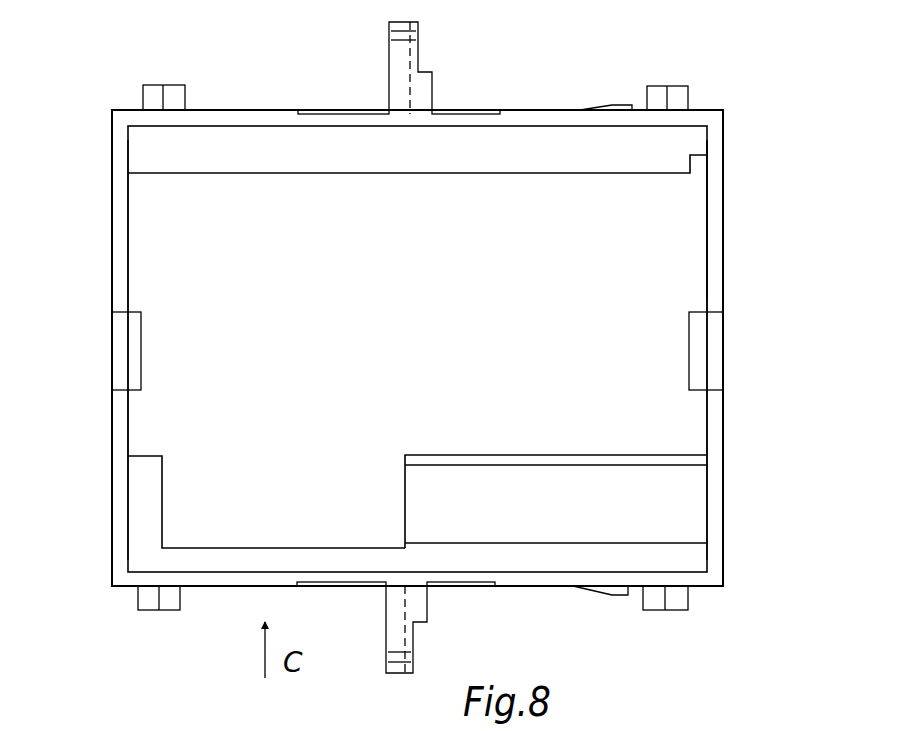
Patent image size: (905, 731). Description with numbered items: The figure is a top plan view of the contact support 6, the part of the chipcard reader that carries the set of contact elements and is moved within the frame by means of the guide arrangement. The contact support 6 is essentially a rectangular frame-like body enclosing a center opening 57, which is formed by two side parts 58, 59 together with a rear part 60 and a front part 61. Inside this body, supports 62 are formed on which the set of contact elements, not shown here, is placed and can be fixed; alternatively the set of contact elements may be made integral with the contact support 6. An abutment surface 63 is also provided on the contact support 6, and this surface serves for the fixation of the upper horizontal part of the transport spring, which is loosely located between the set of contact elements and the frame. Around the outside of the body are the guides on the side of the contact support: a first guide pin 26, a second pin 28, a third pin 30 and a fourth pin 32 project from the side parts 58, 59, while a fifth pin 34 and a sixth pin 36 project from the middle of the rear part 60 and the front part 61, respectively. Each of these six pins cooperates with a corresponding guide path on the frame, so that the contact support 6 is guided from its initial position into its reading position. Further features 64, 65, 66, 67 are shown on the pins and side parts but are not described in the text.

The contact support 6 is at (551, 108).
The first guide pin 26 is at (157, 82).
The second pin 28 is at (677, 85).
The third pin 30 is at (152, 612).
The fourth pin 32 is at (672, 612).
The fifth pin 34 is at (434, 88).
The sixth pin 36 is at (428, 607).
The center opening 57 is at (700, 208).
The side part 58 is at (220, 118).
The side part 59 is at (227, 582).
The rear part 60 is at (118, 248).
The front part 61 is at (712, 275).
The supports 62 is at (398, 152).
The abutment surface 63 is at (570, 480).
The upper guide plate 64 is at (612, 105).
The lower guide plate 65 is at (612, 593).
The upper pin thread 66 is at (388, 30).
The lower pin thread 67 is at (388, 672).